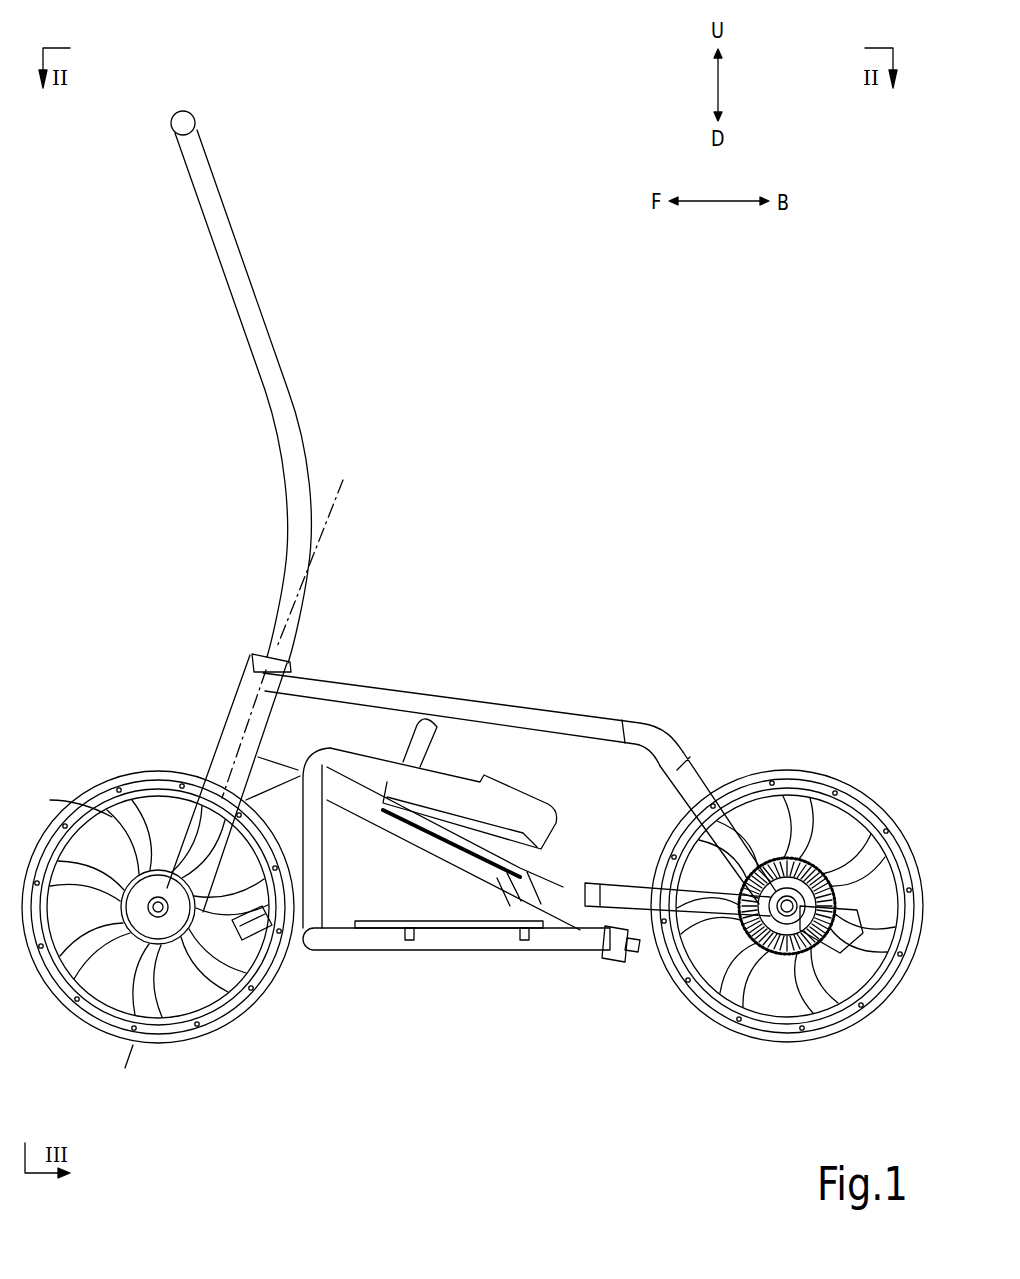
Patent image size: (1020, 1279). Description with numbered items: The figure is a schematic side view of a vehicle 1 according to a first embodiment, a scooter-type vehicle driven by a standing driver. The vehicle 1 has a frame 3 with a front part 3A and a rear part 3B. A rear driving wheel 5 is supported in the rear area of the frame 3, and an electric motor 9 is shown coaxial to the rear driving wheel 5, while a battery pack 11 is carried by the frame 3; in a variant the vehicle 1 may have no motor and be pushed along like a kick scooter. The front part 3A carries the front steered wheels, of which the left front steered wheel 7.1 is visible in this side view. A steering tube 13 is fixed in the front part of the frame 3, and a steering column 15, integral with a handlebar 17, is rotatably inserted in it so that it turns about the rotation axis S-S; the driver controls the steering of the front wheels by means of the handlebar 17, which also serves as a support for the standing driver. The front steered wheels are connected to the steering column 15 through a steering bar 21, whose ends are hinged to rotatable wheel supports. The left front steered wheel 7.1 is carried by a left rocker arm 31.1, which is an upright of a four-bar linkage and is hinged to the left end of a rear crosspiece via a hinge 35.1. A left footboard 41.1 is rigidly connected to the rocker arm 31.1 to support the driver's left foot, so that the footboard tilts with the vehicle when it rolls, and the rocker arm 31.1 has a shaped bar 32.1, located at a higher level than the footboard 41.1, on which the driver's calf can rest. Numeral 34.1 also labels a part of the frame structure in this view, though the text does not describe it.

The vehicle 1 is at (431, 164).
The frame 3 is at (362, 680).
The front part of the frame 3A is at (259, 675).
The rear part of the frame 3B is at (694, 769).
The rear driving wheel 5 is at (822, 773).
The left front steered wheel 7.1 is at (97, 788).
The electric motor 9 is at (797, 942).
The battery pack 11 is at (530, 815).
The steering tube 13 is at (242, 730).
The steering column 15 is at (288, 406).
The handlebar 17 is at (198, 134).
The steering bar 21 is at (255, 930).
The left rocker arm 31.1 is at (552, 964).
The shaped bar 32.1 is at (440, 782).
The vertical post 34.1 is at (330, 930).
The hinge 35.1 is at (615, 952).
The left footboard 41.1 is at (450, 925).